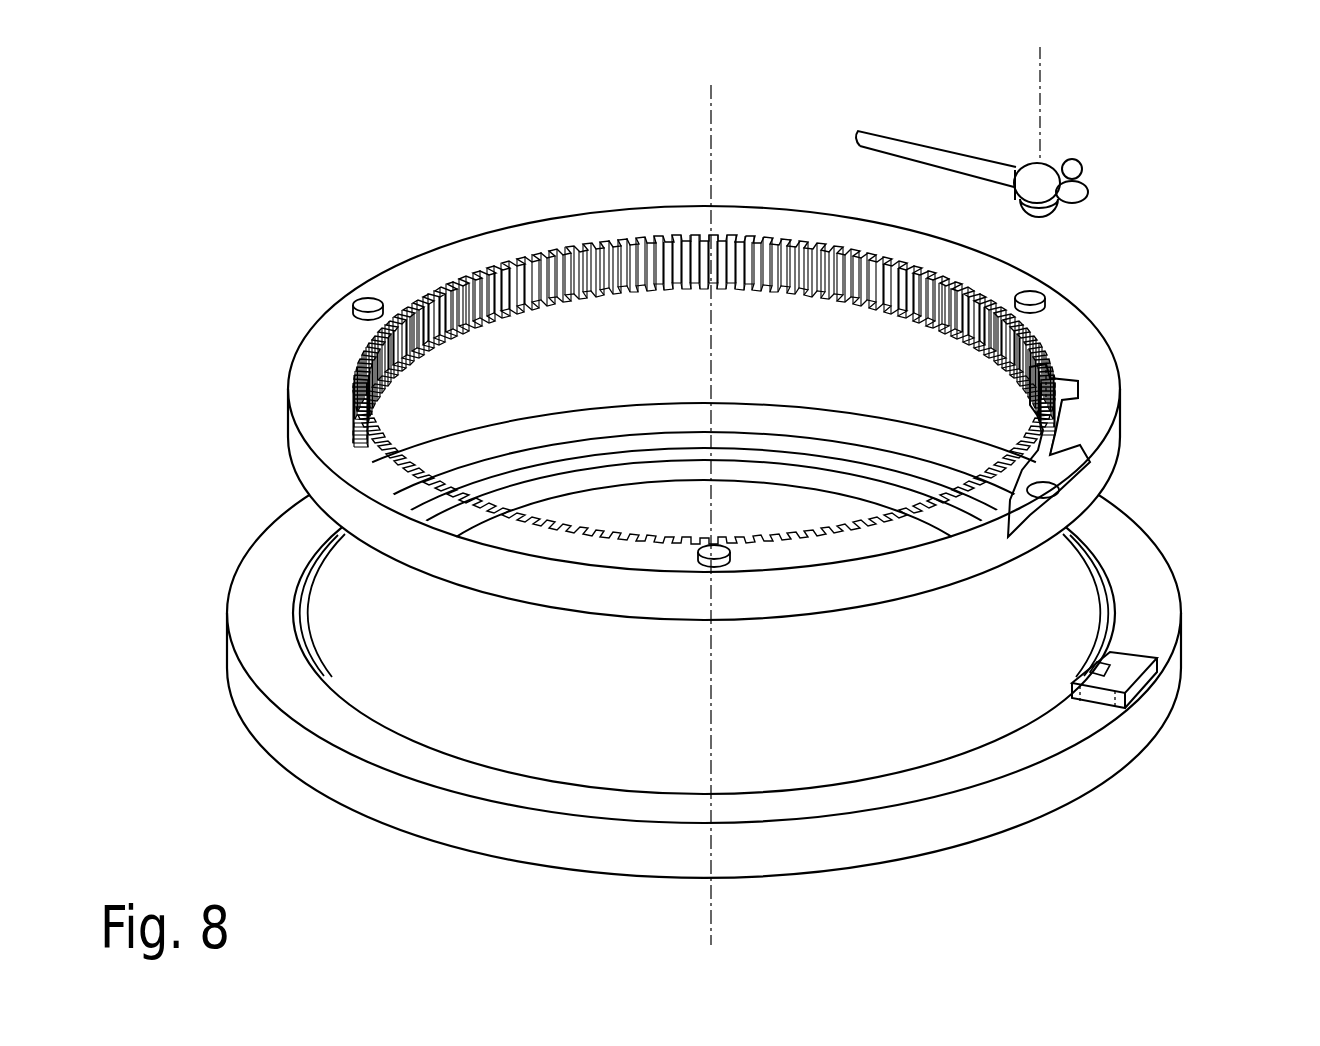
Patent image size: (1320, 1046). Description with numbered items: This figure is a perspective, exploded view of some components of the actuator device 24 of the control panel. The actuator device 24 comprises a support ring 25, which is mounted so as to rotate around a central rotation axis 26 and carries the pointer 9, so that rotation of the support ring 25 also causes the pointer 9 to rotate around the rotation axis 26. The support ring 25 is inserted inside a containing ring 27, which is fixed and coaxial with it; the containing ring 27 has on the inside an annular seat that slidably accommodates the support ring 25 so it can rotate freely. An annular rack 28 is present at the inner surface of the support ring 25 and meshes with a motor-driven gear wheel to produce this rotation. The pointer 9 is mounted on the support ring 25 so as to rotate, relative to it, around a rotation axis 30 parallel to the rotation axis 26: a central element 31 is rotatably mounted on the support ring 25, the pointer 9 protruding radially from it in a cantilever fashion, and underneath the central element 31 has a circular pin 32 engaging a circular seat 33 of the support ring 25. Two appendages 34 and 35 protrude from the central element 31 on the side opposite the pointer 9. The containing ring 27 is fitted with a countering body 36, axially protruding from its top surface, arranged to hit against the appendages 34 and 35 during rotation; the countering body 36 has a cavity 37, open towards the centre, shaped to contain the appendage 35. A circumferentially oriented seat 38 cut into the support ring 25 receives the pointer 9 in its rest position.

The pointer 9 is at (1027, 163).
The actuator device 24 is at (190, 166).
The support ring 25 is at (742, 368).
The central rotation axis 26 is at (708, 144).
The containing ring 27 is at (560, 830).
The annular rack 28 is at (641, 300).
The rotation axis 30 is at (1043, 96).
The central element 31 is at (1028, 168).
The circular pin 32 is at (1042, 212).
The circular seat 33 is at (1055, 445).
The appendage 34 is at (1088, 194).
The appendage 35 is at (1082, 166).
The countering body 36 is at (1138, 635).
The cavity 37 is at (1082, 662).
The seat 38 is at (1050, 412).